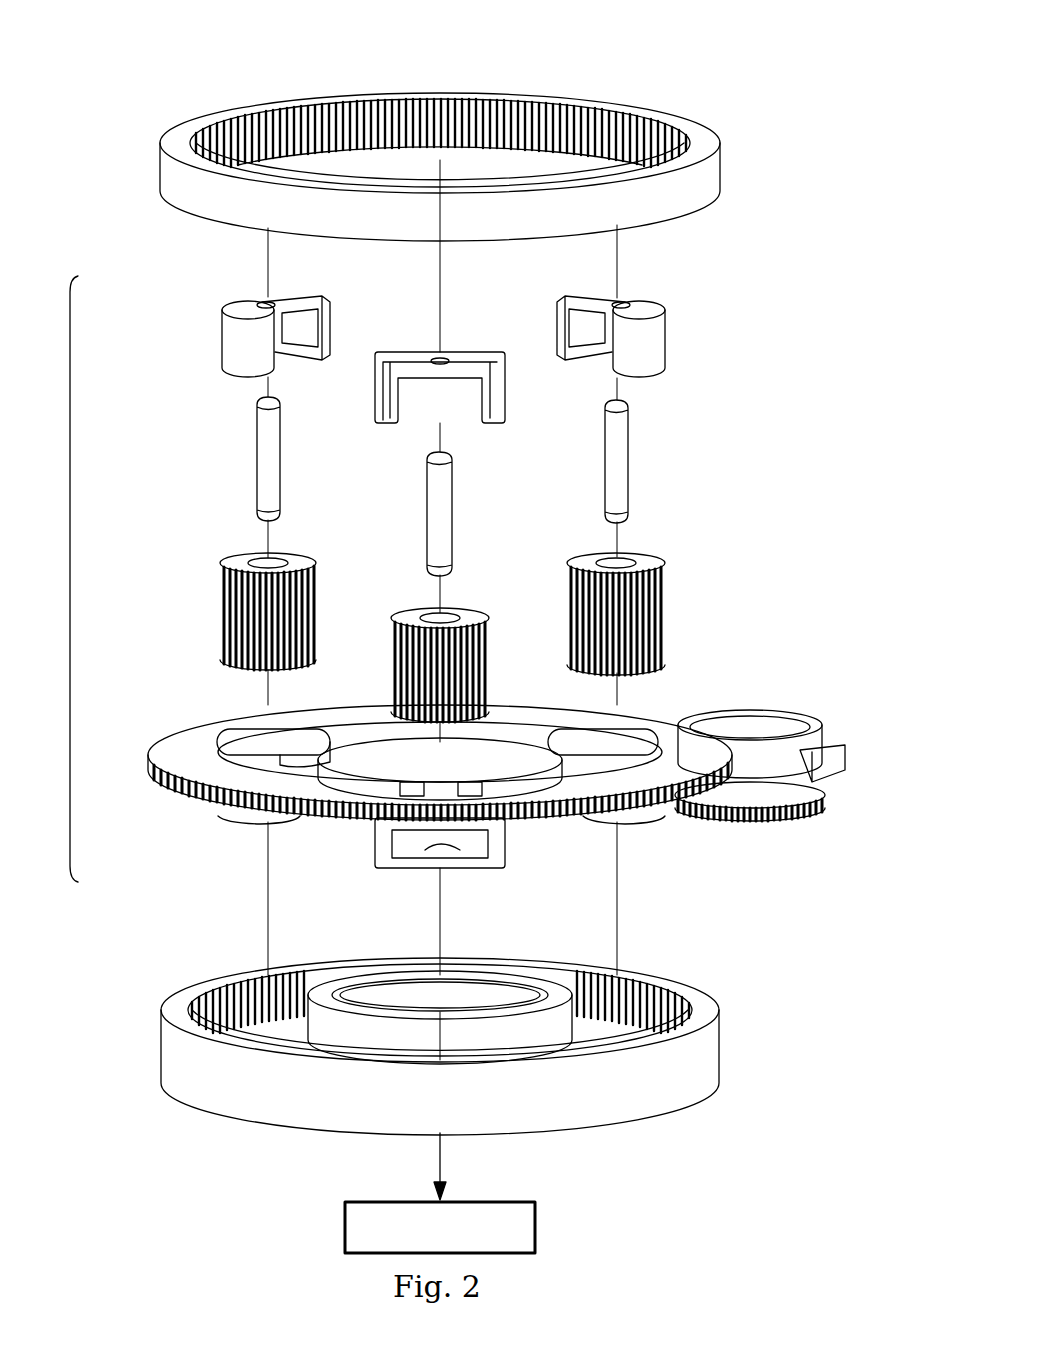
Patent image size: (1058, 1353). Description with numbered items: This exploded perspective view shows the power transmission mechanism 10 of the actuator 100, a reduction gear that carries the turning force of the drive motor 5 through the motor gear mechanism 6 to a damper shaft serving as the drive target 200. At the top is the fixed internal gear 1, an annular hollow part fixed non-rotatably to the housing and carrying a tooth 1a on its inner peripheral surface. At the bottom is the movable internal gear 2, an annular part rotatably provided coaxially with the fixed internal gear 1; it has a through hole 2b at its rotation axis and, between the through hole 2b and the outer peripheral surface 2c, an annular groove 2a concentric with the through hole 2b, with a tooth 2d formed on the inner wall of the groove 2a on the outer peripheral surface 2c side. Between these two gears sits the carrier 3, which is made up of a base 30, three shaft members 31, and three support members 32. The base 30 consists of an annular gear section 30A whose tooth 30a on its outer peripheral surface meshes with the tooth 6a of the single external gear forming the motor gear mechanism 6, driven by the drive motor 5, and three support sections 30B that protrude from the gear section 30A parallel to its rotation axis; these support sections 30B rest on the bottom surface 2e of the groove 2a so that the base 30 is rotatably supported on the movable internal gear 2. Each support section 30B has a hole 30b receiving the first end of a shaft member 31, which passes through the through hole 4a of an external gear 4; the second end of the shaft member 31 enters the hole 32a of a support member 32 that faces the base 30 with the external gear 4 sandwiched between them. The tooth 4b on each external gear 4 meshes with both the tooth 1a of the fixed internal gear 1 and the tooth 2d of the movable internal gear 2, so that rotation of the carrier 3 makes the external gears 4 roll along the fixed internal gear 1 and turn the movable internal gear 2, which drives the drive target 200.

The actuator 100 is at (815, 73).
The power transmission mechanism 10 is at (112, 155).
The fixed internal gear 1 is at (480, 140).
The tooth of fixed internal gear 1a is at (611, 103).
The carrier 3 is at (70, 478).
The support member 32 is at (463, 351).
The hole of support member 32a is at (263, 303).
The shaft member 31 is at (257, 440).
The external gear 4 is at (442, 621).
The through hole of external gear 4a is at (258, 562).
The tooth of external gear 4b is at (220, 633).
The base 30 is at (435, 824).
The tooth of gear section 30a is at (187, 797).
The hole of support section 30b is at (506, 846).
The gear section 30A is at (278, 780).
The support section 30B is at (350, 757).
The drive motor 5 is at (762, 718).
The motor gear mechanism 6 is at (783, 760).
The tooth of motor gear mechanism external gear 6a is at (823, 801).
The movable internal gear 2 is at (447, 1018).
The groove 2a is at (180, 975).
The through hole 2b is at (517, 997).
The outer peripheral surface 2c is at (698, 1067).
The tooth of movable internal gear 2d is at (593, 982).
The bottom surface of groove 2e is at (655, 975).
The drive target 200 is at (345, 1222).